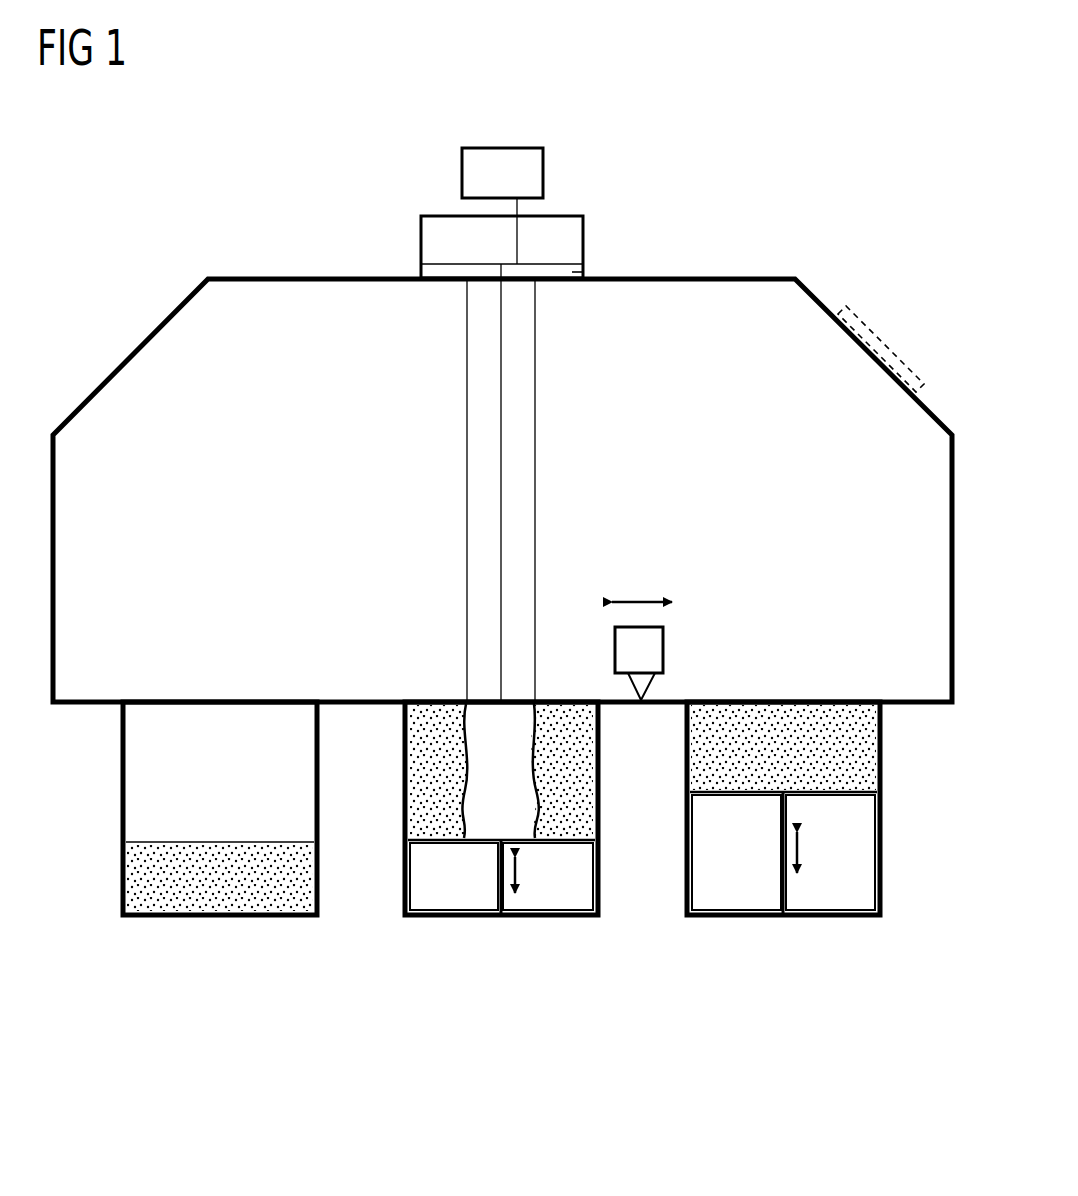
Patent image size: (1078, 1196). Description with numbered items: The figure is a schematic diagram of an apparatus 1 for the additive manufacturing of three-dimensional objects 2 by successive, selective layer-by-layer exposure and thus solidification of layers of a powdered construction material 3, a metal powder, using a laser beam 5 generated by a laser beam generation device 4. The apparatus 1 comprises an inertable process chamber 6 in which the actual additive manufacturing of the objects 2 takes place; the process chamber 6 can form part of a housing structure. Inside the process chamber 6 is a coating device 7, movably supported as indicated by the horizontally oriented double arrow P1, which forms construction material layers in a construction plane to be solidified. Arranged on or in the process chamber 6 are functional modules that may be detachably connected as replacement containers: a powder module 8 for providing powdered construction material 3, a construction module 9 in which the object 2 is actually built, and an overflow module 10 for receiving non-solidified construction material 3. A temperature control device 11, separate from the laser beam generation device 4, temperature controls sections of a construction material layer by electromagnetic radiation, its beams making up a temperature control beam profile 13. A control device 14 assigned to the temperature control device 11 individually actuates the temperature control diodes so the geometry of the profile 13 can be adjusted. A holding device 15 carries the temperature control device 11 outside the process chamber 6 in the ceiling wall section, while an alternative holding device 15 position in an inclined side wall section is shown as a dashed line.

The apparatus 1 is at (690, 126).
The three-dimensional object 2 is at (482, 758).
The powdered construction material 3 is at (300, 880).
The laser beam generation device 4 is at (437, 215).
The laser beam 5 is at (502, 580).
The process chamber 6 is at (756, 277).
The coating device 7 is at (663, 645).
The powder module 8 is at (789, 934).
The construction module 9 is at (509, 934).
The overflow module 10 is at (218, 934).
The temperature control device 11 is at (583, 272).
The temperature control beam profile 13 is at (551, 440).
The control device 14 is at (503, 147).
The holding device 15 is at (414, 271).
The double arrow P1 is at (645, 598).